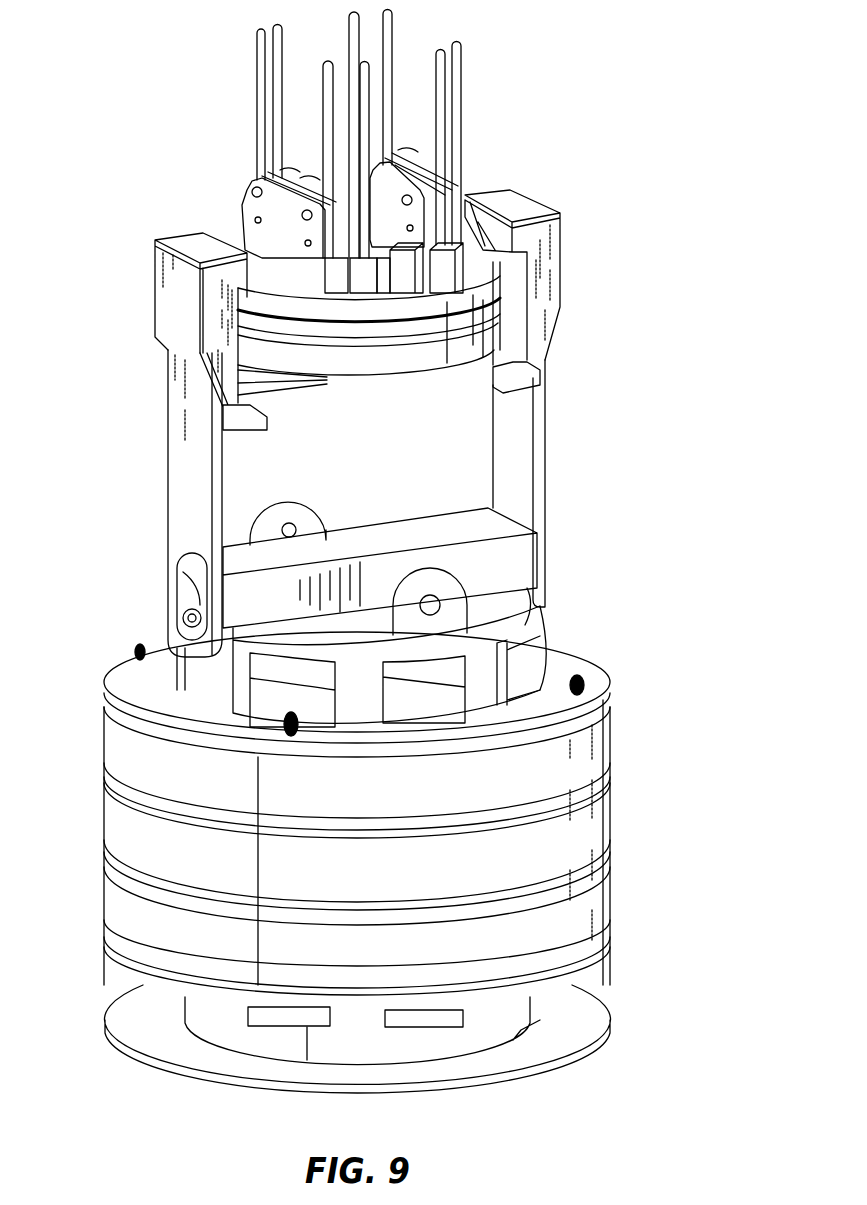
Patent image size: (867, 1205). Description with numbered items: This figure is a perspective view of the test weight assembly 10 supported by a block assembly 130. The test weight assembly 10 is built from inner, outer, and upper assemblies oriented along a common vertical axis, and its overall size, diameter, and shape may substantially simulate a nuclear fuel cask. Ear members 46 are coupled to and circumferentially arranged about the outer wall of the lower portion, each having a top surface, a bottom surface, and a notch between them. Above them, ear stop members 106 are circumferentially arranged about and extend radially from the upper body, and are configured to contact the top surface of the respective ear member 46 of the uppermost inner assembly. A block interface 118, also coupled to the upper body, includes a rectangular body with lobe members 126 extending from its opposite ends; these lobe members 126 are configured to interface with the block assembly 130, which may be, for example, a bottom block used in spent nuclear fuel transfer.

The test weight assembly 10 is at (676, 790).
The ear member 46 is at (268, 707).
The ear stop member 106 is at (263, 667).
The block interface 118 is at (380, 519).
The lobe member 126 is at (183, 612).
The block assembly 130 is at (573, 340).